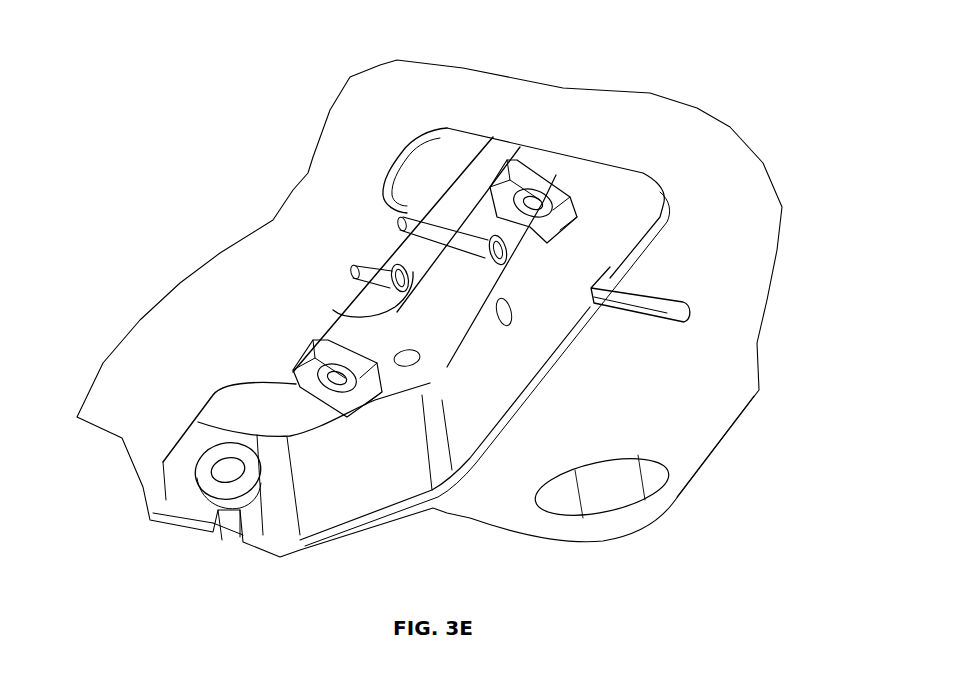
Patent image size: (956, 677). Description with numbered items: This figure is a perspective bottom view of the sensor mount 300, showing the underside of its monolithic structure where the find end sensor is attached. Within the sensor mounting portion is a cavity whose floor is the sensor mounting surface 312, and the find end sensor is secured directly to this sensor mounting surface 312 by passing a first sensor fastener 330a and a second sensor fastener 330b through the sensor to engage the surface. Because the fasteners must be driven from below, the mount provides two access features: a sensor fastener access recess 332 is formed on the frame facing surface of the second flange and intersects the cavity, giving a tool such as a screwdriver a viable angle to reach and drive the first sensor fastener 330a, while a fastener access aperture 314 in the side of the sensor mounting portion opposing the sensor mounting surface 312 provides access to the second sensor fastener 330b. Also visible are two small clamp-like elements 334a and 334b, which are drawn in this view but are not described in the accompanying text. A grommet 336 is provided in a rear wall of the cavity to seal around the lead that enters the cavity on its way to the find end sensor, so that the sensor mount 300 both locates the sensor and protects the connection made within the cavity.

The sensor mount 300 is at (800, 57).
The sensor mounting surface 312 is at (337, 297).
The fastener access aperture 314 is at (510, 320).
The first sensor fastener 330a is at (380, 267).
The second sensor fastener 330b is at (413, 220).
The sensor fastener access recess 332 is at (673, 293).
The first clamp 334a is at (548, 170).
The second clamp 334b is at (293, 393).
The grommet 336 is at (207, 493).